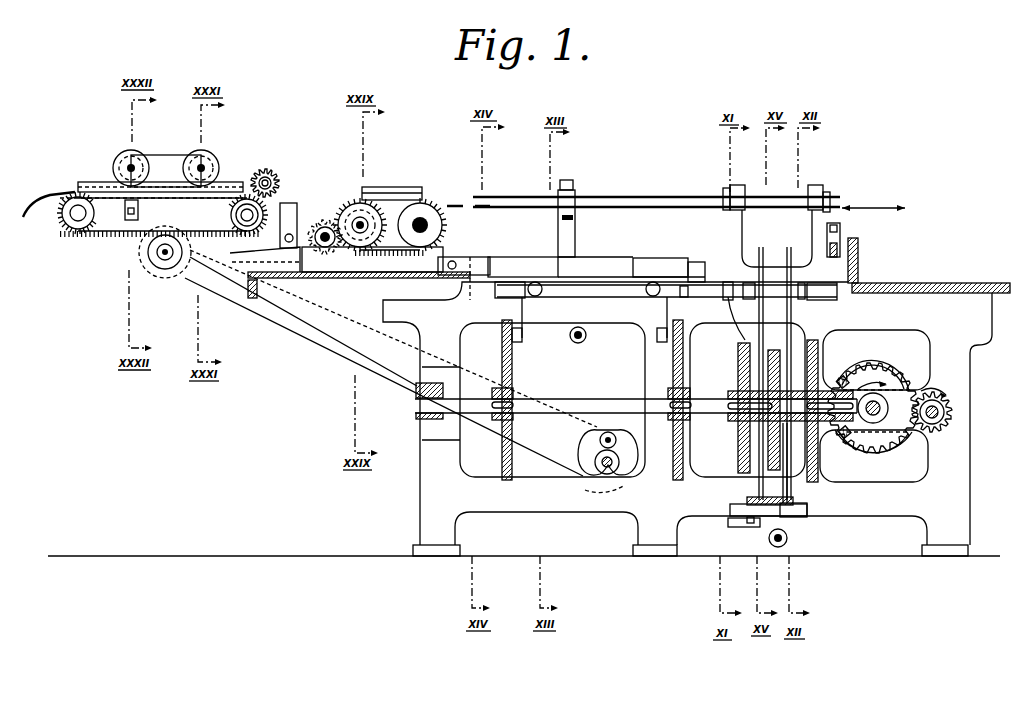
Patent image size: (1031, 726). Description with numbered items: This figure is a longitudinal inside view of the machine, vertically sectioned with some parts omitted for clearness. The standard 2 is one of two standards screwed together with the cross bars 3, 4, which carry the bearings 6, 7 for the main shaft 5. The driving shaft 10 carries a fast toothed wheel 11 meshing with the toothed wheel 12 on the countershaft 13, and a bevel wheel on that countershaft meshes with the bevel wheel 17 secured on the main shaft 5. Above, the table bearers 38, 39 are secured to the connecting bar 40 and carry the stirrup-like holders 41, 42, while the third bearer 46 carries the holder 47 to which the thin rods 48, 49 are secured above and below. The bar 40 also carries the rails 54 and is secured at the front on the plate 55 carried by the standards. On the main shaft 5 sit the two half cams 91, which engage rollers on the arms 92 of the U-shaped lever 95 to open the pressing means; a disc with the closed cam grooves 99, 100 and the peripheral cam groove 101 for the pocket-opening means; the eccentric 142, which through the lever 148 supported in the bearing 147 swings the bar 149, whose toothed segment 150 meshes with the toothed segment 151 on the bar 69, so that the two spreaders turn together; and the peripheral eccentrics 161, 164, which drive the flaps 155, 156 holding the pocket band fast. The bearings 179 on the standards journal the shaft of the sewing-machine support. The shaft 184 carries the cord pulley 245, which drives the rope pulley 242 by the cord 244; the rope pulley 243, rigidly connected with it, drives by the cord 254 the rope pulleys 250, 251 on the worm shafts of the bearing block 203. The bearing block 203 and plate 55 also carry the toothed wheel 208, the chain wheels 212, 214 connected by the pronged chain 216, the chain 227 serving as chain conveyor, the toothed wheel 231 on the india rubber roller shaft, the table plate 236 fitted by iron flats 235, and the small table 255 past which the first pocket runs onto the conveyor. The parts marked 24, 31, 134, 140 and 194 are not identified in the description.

The standard 2 is at (960, 499).
The cross bar 3 is at (430, 431).
The cross bar 4 is at (812, 445).
The main shaft 5 is at (618, 383).
The bearing 6 is at (418, 386).
The bearing 7 is at (818, 366).
The driving shaft 10 is at (950, 418).
The toothed wheel 11 is at (952, 404).
The toothed wheel 12 is at (889, 378).
The countershaft 13 is at (879, 412).
The bevel wheel 17 is at (845, 441).
The table 24 is at (978, 283).
The pivot pin 31 is at (786, 547).
The table bearer 38 is at (733, 226).
The table bearer 39 is at (858, 264).
The connecting bar 40 is at (590, 266).
The stirrup-like holder 41 is at (737, 184).
The stirrup-like holder 42 is at (818, 185).
The third bearer 46 is at (575, 233).
The stirrup-like holder 47 is at (572, 183).
The thin rods 48 is at (495, 195).
The thin rods 49 is at (510, 209).
The rails 54 is at (514, 265).
The plate 55 is at (314, 292).
The bar 69 is at (789, 247).
The half cams 91 is at (502, 454).
The arms 92 is at (522, 313).
The U-shaped lever 95 is at (592, 294).
The cam groove 99 is at (787, 343).
The cam groove 100 is at (766, 349).
The peripheral cam groove 101 is at (757, 521).
The guide bracket 134 is at (841, 232).
The lever arm 140 is at (810, 470).
The eccentric 142 is at (740, 459).
The bearing 147 is at (730, 511).
The lever 148 is at (745, 512).
The bar 149 is at (762, 247).
The toothed segment 150 is at (746, 500).
The toothed segment 151 is at (800, 516).
The flap 155 is at (724, 192).
The flap 156 is at (832, 196).
The peripheral eccentric 161 is at (742, 297).
The peripheral eccentric 164 is at (796, 482).
The bearings 179 is at (588, 338).
The shaft 184 is at (596, 463).
The idler pulley 194 is at (600, 439).
The bearing block 203 is at (107, 233).
The toothed wheel 208 is at (325, 215).
The chain wheel 212 is at (356, 203).
The chain wheel 214 is at (427, 201).
The chain 216 is at (362, 190).
The chain 227 is at (208, 192).
The toothed wheel 231 is at (273, 171).
The iron flats 235 is at (117, 240).
The table plate 236 is at (33, 200).
The rope pulley 242 is at (148, 275).
The rope pulley 243 is at (173, 278).
The cord 244 is at (331, 350).
The cord pulley 245 is at (603, 492).
The rope pulley 250 is at (210, 160).
The rope pulley 251 is at (117, 160).
The cord 254 is at (162, 155).
The small table 255 is at (288, 200).